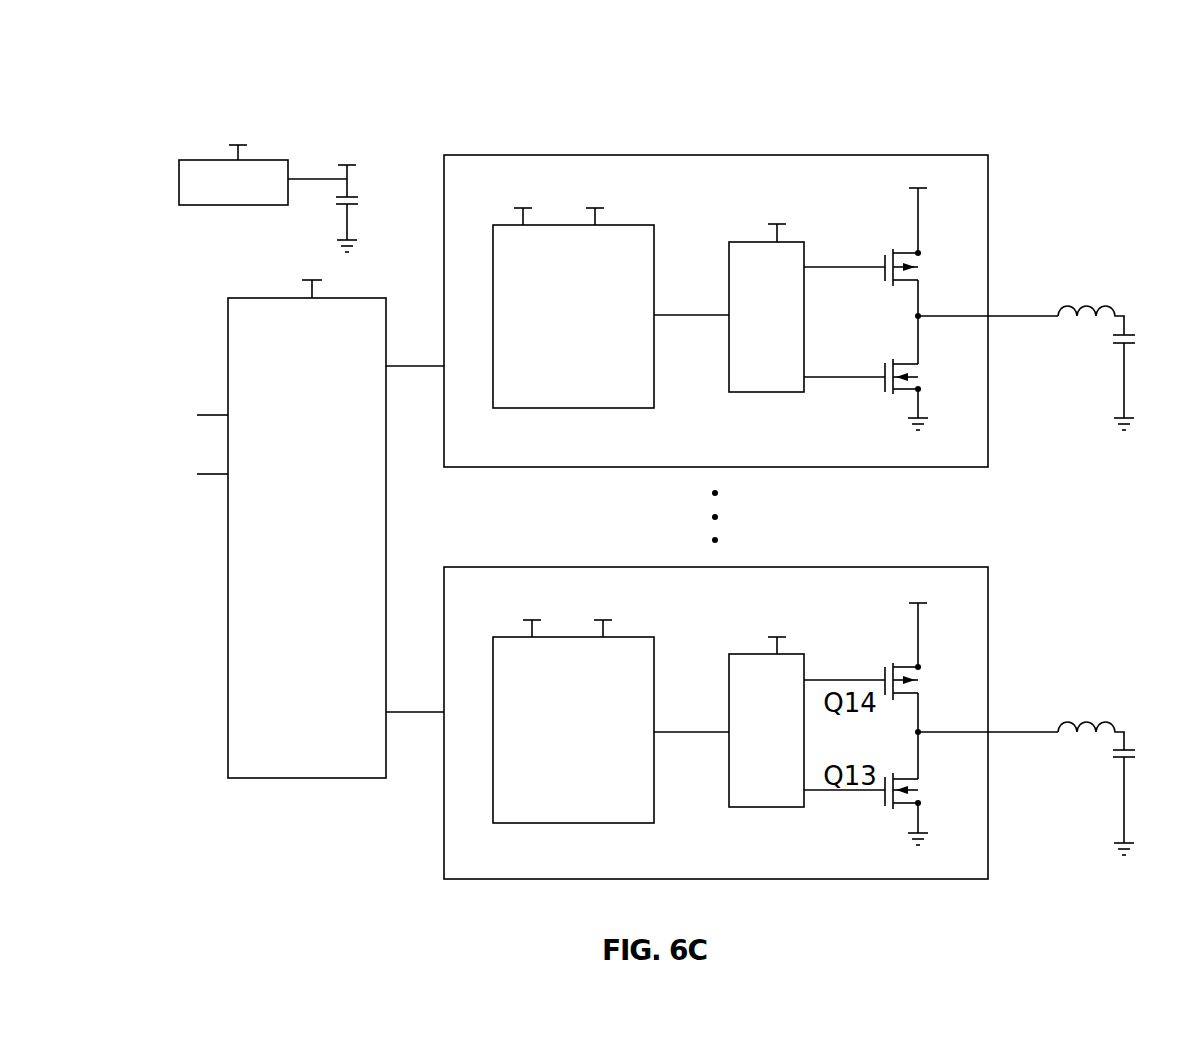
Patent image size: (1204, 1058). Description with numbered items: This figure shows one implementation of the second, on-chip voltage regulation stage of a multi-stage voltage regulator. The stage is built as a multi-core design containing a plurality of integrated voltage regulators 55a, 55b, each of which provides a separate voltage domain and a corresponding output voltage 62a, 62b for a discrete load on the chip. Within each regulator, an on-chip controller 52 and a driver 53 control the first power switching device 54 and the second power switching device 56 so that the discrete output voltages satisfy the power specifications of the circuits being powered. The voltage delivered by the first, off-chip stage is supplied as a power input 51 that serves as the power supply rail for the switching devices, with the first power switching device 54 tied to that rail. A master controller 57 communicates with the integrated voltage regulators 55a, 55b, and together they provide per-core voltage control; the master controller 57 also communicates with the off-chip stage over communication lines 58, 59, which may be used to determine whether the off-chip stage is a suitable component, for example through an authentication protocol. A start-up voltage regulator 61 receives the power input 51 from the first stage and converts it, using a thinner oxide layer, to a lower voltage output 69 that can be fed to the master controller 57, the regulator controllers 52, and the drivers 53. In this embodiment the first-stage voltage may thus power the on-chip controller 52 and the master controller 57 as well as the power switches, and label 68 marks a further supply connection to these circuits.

The power input 51 is at (780, 185).
The on-chip controller 52 is at (598, 410).
The driver 53 is at (766, 393).
The first power switching device 54 is at (920, 262).
The integrated voltage regulator 55a is at (517, 470).
The integrated voltage regulator 55b is at (515, 881).
The second power switching device 56 is at (920, 385).
The master controller 57 is at (283, 780).
The communication line 58 is at (216, 476).
The communication line 59 is at (216, 413).
The start-up voltage regulator 61 is at (246, 195).
The output voltage 62a is at (1040, 315).
The output voltage 62b is at (1040, 730).
The Vcc power supply 68 is at (240, 108).
The voltage output of start-up voltage regulator 69 is at (347, 132).